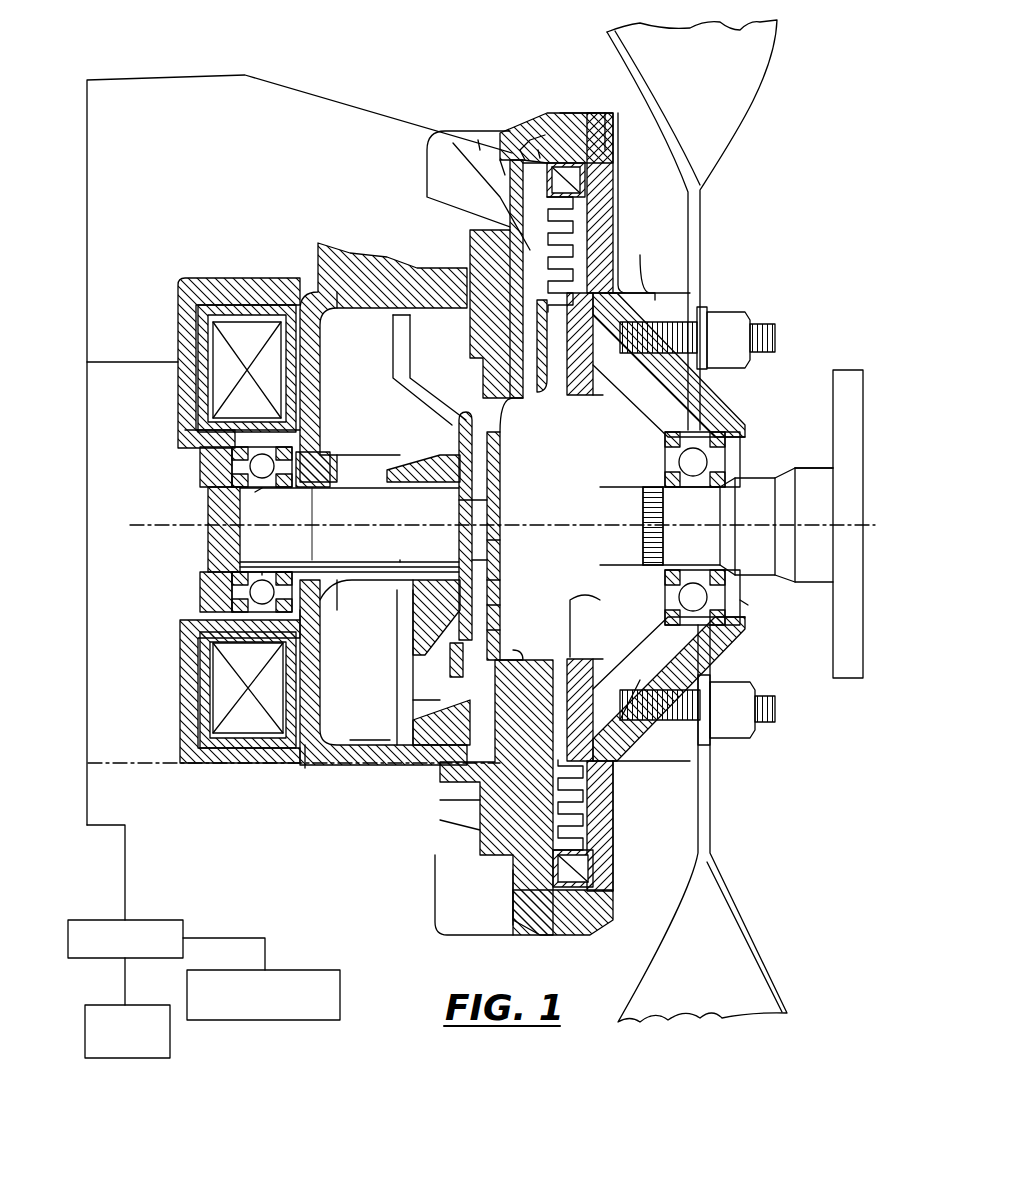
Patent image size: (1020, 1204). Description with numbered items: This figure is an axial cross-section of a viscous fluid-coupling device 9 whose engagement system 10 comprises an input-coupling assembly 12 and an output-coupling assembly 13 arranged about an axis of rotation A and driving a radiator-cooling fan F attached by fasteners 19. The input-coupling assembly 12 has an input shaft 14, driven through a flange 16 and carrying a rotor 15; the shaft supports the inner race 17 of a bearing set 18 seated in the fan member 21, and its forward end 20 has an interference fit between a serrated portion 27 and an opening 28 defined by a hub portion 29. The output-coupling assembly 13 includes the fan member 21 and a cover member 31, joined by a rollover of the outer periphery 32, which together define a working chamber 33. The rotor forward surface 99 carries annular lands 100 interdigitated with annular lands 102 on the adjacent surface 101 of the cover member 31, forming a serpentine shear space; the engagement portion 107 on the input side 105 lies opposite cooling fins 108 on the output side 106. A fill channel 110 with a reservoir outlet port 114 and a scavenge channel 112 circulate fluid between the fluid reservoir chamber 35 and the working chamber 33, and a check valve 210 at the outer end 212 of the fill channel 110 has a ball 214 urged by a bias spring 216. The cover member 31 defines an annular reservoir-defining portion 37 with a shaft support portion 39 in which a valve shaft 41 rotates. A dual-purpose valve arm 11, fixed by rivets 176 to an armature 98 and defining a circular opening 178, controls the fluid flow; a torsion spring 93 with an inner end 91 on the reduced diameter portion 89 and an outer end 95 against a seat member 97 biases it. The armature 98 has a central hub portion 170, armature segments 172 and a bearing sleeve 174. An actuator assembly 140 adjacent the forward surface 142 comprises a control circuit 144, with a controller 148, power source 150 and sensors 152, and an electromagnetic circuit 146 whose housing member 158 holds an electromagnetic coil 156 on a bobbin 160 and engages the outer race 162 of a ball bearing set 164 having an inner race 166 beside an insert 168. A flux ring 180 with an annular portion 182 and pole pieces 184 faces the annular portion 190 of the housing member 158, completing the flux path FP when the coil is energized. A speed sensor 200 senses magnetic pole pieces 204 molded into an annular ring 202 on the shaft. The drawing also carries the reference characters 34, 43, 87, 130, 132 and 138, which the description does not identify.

The viscous fluid-coupling device 9 is at (773, 160).
The engagement system 10 is at (262, 880).
The dual-purpose valve arm 11 is at (470, 382).
The input-coupling assembly 12 is at (755, 468).
The output-coupling assembly 13 is at (340, 182).
The input shaft 14 is at (812, 480).
The rotor 15 is at (588, 150).
The flange 16 is at (833, 378).
The inner race 17 is at (740, 598).
The bearing set 18 is at (735, 430).
The fasteners 19 is at (728, 315).
The forward end 20 is at (672, 445).
The fan member 21 is at (630, 290).
The serrated portion 27 is at (672, 586).
The opening 28 is at (595, 660).
The hub portion 29 is at (631, 678).
The cover member 31 is at (458, 818).
The outer periphery 32 is at (594, 128).
The working chamber 33 is at (620, 414).
The rotor wall 34 is at (390, 617).
The fluid reservoir chamber 35 is at (360, 682).
The annular reservoir-defining portion 37 is at (300, 768).
The shaft support portion 39 is at (388, 440).
The valve shaft 41 is at (218, 545).
The armature wedge 43 is at (423, 452).
The armature plate 87 is at (468, 414).
The reduced diameter portion 89 is at (456, 500).
The inner end 91 is at (502, 542).
The spiral-wire torsion spring 93 is at (502, 600).
The outer end 95 is at (504, 472).
The seat member 97 is at (506, 410).
The armature assembly 98 is at (380, 655).
The forward surface 99 is at (582, 200).
The annular lands 100 is at (470, 845).
The adjacent surface 101 is at (508, 872).
The annular lands 102 is at (590, 870).
The input side 105 is at (520, 655).
The output side 106 is at (488, 765).
The engagement portion 107 is at (470, 825).
The cooling fins 108 is at (545, 135).
The fill channel 110 is at (443, 190).
The scavenge channel 112 is at (442, 150).
The reservoir outlet port 114 is at (562, 124).
The armature 130 is at (502, 518).
The passage wall 132 is at (478, 352).
The passage wall 138 is at (478, 330).
The actuator assembly 140 is at (152, 222).
The forward surface 142 is at (185, 300).
The control circuit 144 is at (100, 902).
The electromagnetic circuit 146 is at (272, 258).
The controller 148 is at (68, 958).
The power source 150 is at (125, 1060).
The sensors 152 is at (258, 1022).
The electromagnetic coil 156 is at (228, 770).
The ferromagnetic housing member 158 is at (200, 620).
The bobbin 160 is at (210, 708).
The outer race 162 is at (349, 530).
The ball bearing set 164 is at (305, 552).
The inner race 166 is at (262, 488).
The insert 168 is at (310, 560).
The central hub portion 170 is at (450, 620).
The armature segments 172 is at (420, 718).
The bearing sleeve 174 is at (420, 575).
The rivets 176 is at (502, 626).
The circular opening 178 is at (502, 576).
The flux ring 180 is at (340, 768).
The annular portion 182 is at (308, 768).
The pole pieces 184 is at (382, 740).
The annular portion 190 is at (268, 775).
The speed sensor 200 is at (190, 430).
The annular ring 202 is at (195, 463).
The magnetic pole pieces 204 is at (200, 470).
The check valve 210 is at (520, 150).
The outer end 212 is at (500, 160).
The ball 214 is at (478, 140).
The bias spring 216 is at (538, 150).
The axis of rotation A is at (180, 530).
The radiator-cooling fan F is at (760, 62).
The flux path FP is at (378, 545).